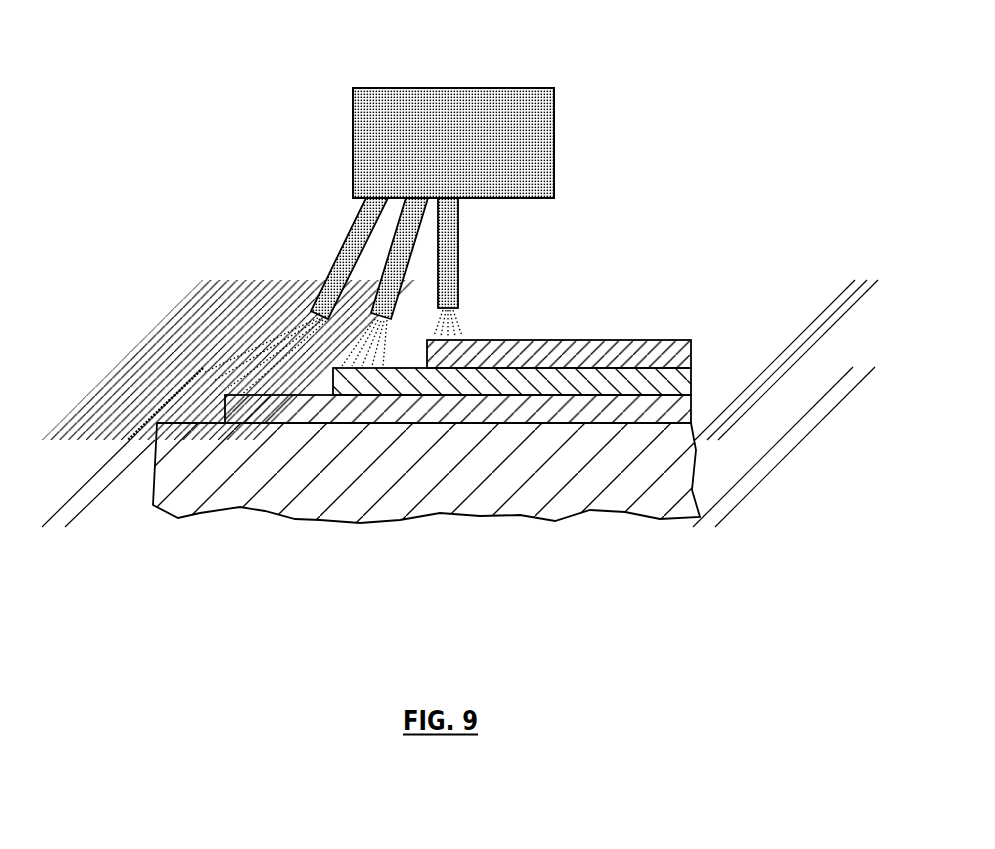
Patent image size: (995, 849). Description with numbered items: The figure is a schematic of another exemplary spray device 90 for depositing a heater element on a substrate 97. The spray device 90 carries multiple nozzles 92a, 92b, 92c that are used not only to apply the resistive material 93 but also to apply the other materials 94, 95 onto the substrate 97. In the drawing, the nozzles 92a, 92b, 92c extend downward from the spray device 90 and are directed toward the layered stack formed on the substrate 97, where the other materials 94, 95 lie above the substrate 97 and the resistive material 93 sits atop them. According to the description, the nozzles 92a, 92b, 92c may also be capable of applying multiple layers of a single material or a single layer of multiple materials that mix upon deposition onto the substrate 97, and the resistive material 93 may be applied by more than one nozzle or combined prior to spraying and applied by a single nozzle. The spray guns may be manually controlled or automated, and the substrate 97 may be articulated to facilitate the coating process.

The spray device 90 is at (467, 93).
The nozzle 92a is at (458, 280).
The nozzle 92b is at (392, 252).
The nozzle 92c is at (318, 296).
The resistive material 93 is at (625, 338).
The other material 94 is at (688, 378).
The other material 95 is at (692, 405).
The substrate 97 is at (675, 475).